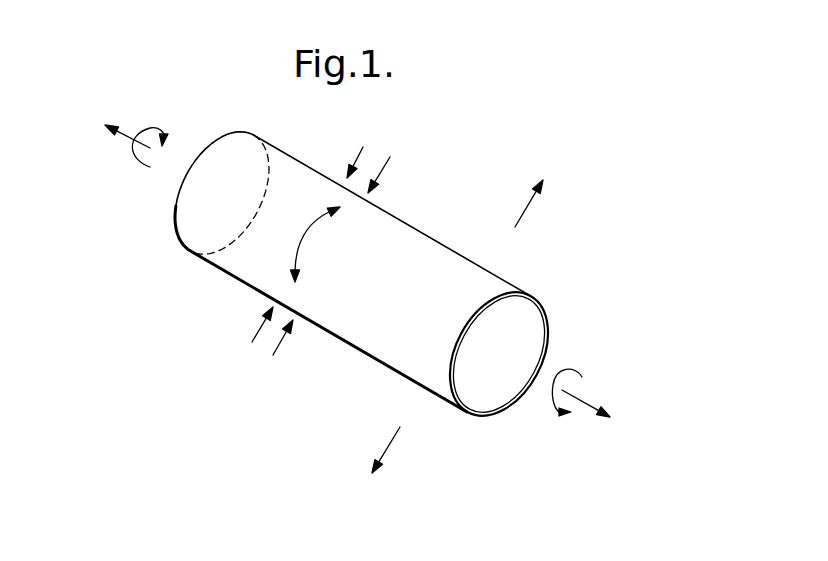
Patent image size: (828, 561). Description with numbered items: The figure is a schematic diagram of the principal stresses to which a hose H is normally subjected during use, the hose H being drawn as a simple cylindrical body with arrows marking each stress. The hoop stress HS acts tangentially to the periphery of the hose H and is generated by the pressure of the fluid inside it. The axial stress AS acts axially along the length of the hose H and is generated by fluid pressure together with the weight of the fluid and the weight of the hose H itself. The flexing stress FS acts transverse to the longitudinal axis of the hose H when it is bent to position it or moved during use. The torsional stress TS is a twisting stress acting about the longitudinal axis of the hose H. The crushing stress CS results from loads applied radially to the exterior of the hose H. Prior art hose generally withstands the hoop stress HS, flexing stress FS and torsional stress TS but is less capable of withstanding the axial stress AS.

The hose H is at (418, 237).
The axial stress AS is at (377, 249).
The torsional stress TS is at (370, 264).
The crushing stress CS is at (298, 235).
The hoop stress HS is at (303, 244).
The flexing stress FS is at (475, 346).